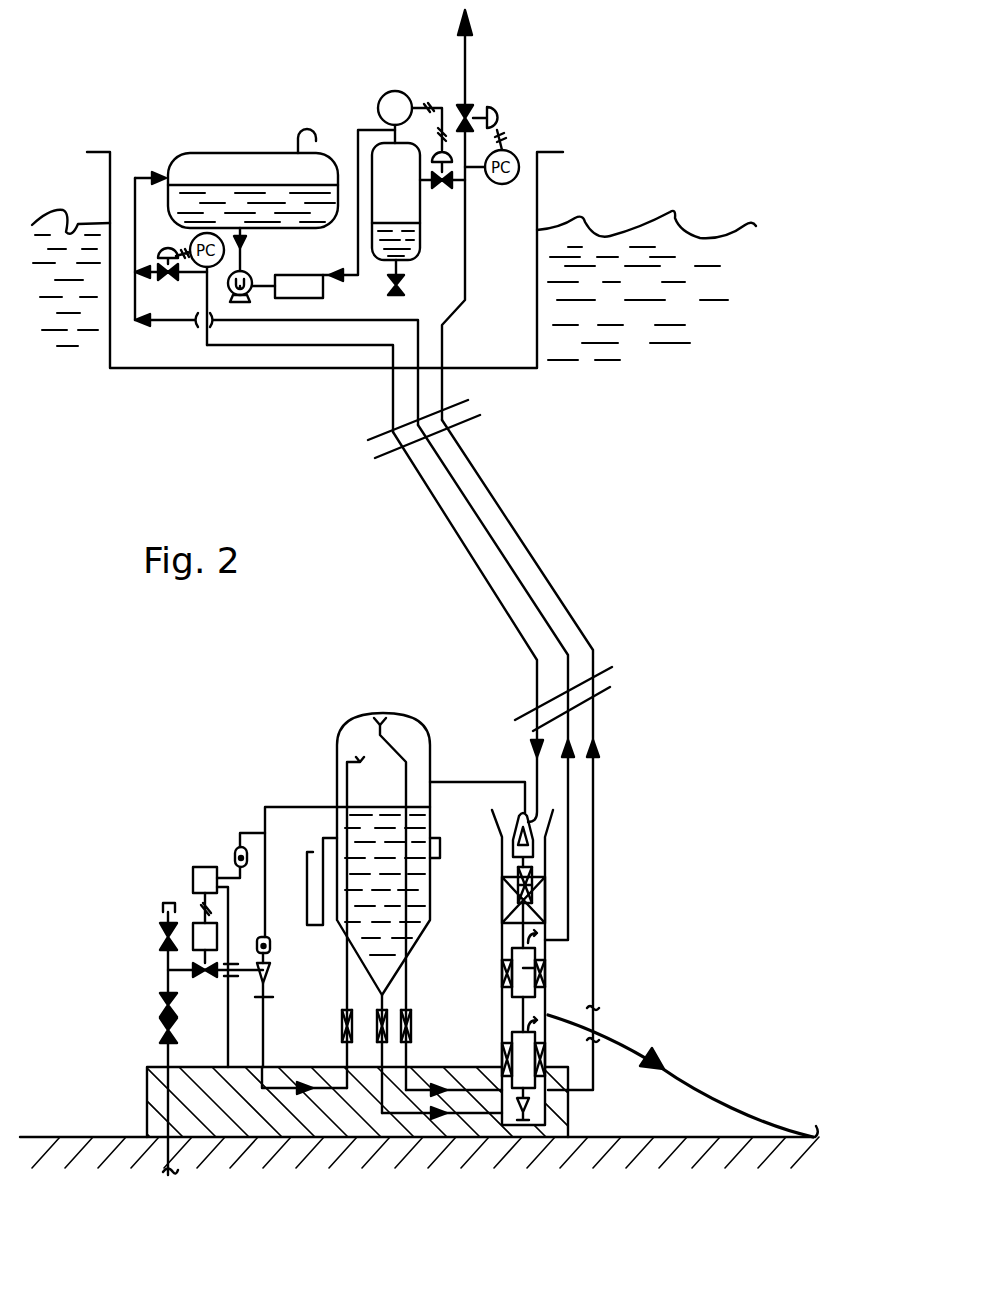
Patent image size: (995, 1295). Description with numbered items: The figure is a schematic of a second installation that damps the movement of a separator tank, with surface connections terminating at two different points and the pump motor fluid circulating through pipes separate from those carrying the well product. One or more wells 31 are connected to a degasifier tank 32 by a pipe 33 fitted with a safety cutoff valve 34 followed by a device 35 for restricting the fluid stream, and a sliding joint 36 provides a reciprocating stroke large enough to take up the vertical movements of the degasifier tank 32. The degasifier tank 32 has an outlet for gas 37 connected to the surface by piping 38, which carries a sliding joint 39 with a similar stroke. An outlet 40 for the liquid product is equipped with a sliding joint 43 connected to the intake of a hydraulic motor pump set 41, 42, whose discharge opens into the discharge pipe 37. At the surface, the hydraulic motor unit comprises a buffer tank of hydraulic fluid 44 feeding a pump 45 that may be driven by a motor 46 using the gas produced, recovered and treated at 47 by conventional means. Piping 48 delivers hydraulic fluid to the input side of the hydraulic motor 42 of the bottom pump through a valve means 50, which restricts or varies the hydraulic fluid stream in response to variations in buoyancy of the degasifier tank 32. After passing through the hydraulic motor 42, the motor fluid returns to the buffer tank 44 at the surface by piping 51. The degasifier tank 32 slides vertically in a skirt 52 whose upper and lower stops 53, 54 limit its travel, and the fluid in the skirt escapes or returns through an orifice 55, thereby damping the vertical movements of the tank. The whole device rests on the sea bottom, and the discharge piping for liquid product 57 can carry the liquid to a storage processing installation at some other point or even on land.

The well 31 is at (165, 955).
The degasifier tank 32 is at (337, 733).
The pipe 33 is at (340, 1010).
The safety cutoff valve 34 is at (197, 966).
The device for restricting the fluid stream 35 is at (240, 831).
The sliding joint 36 is at (147, 1105).
The outlet for gas 37 is at (395, 782).
The piping 38 is at (596, 816).
The sliding joint 39 is at (546, 903).
The outlet for the liquid product 40 is at (607, 1137).
The hydraulic motor pump set 41 is at (546, 1058).
The hydraulic motor 42 is at (546, 972).
The sliding joint 43 is at (546, 930).
The buffer tank of hydraulic fluid 44 is at (177, 153).
The pump 45 is at (254, 290).
The motor 46 is at (313, 290).
The gas treatment means 47 is at (385, 158).
The piping 48 is at (354, 348).
The valve means 50 is at (552, 808).
The piping 51 is at (536, 600).
The skirt 52 is at (384, 993).
The upper stop 53 is at (440, 850).
The lower stop 54 is at (444, 863).
The orifice 55 is at (265, 807).
The discharge piping for liquid product 57 is at (723, 1107).